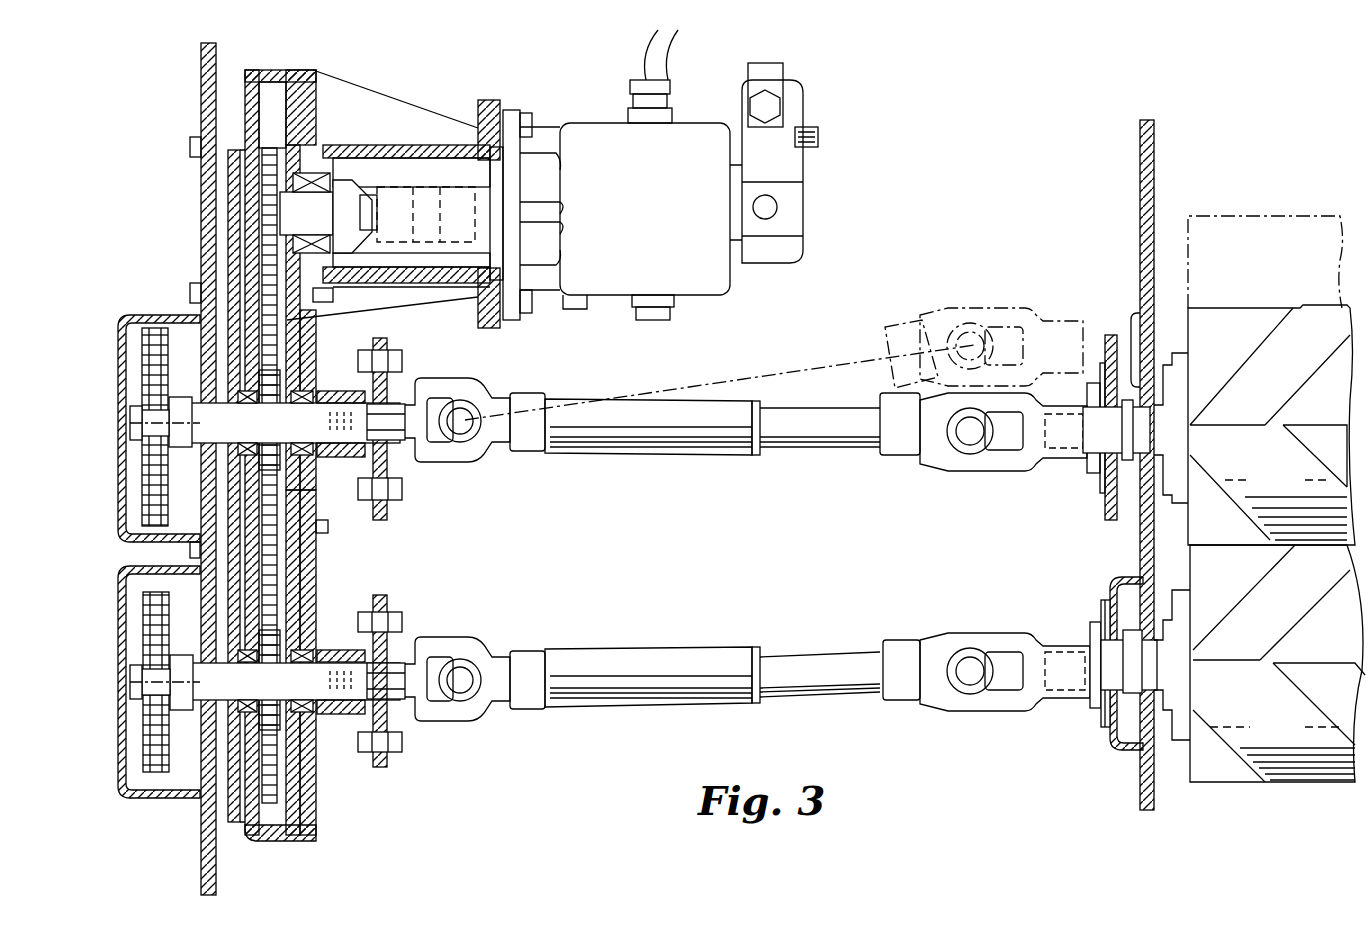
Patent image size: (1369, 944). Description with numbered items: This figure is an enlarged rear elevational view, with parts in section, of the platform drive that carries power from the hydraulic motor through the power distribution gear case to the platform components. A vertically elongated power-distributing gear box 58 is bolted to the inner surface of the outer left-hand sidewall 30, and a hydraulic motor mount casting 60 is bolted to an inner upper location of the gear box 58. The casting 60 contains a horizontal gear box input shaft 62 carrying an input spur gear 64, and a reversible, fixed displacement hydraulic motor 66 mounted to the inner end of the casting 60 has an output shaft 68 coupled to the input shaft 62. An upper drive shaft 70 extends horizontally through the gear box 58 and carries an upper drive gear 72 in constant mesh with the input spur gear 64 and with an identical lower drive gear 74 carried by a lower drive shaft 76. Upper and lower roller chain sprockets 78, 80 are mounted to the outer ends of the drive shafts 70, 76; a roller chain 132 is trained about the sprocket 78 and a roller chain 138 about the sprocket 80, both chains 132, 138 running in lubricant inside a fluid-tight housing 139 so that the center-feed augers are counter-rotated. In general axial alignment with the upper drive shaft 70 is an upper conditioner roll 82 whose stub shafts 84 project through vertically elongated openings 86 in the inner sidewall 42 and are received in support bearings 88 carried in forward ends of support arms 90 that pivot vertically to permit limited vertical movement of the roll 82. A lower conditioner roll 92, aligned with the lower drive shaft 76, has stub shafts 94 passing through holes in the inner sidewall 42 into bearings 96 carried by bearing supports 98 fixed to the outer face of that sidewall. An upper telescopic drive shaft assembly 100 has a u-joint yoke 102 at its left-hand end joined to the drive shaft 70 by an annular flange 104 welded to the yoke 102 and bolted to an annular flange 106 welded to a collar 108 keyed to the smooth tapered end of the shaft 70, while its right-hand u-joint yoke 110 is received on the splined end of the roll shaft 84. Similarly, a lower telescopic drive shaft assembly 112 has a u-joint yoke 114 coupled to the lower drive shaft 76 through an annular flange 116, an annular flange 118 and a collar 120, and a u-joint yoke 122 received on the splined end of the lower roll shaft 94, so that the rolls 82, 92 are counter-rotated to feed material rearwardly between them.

The outer left-hand sidewall 30 is at (217, 882).
The inner left-hand side wall 42 is at (1150, 152).
The power-distributing gear box 58 is at (327, 569).
The hydraulic motor mount casting 60 is at (353, 97).
The gear box input shaft 62 is at (322, 168).
The input spur gear 64 is at (268, 148).
The hydraulic motor 66 is at (693, 298).
The output shaft 68 is at (490, 173).
The upper drive shaft 70 is at (205, 420).
The upper drive gear 72 is at (290, 350).
The lower drive gear 74 is at (272, 840).
The lower drive shaft 76 is at (307, 722).
The upper roller chain sprocket 78 is at (142, 358).
The lower roller chain sprocket 80 is at (147, 725).
The upper conditioner roll 82 is at (1237, 338).
The stub shaft 84 is at (1148, 422).
The vertically elongated opening 86 is at (1138, 320).
The support bearing 88 is at (1097, 487).
The support arm 90 is at (1108, 337).
The lower conditioner roll 92 is at (1235, 772).
The stub shaft 94 is at (1150, 678).
The bearing 96 is at (1100, 640).
The bearing support 98 is at (1130, 750).
The upper telescopic drive shaft assembly 100 is at (650, 455).
The u-joint yoke 102 is at (428, 396).
The annular flange 104 is at (395, 490).
The annular flange 106 is at (380, 520).
The collar 108 is at (348, 392).
The u-joint yoke 110 is at (1020, 472).
The lower telescopic drive shaft assembly 112 is at (700, 702).
The u-joint yoke 114 is at (430, 655).
The annular flange 116 is at (398, 727).
The annular flange 118 is at (380, 767).
The collar 120 is at (305, 683).
The u-joint yoke 122 is at (1030, 712).
The roller chain 132 is at (148, 322).
The roller chain 138 is at (178, 798).
The fluid-tight housing 139 is at (135, 545).